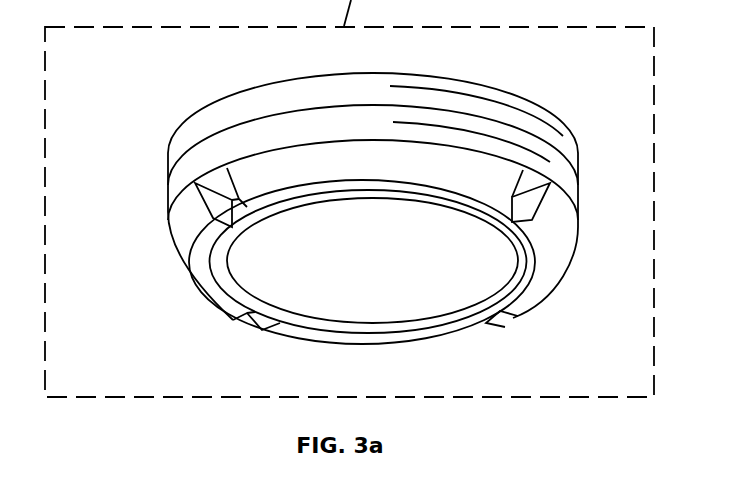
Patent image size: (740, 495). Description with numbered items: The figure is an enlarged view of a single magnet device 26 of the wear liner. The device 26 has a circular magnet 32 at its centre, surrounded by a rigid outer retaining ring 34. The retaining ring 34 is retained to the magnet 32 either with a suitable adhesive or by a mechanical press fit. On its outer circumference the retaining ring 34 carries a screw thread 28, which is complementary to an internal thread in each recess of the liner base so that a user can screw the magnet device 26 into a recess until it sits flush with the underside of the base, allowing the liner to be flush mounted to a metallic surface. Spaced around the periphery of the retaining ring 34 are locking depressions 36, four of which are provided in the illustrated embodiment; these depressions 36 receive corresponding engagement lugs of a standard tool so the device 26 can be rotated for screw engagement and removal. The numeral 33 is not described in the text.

The magnet device 26 is at (102, 233).
The screw thread 28 is at (512, 127).
The circular magnet 32 is at (345, 270).
The inner wall 33 is at (523, 263).
The rigid outer retaining ring 34 is at (558, 221).
The locking depressions 36 is at (222, 192).